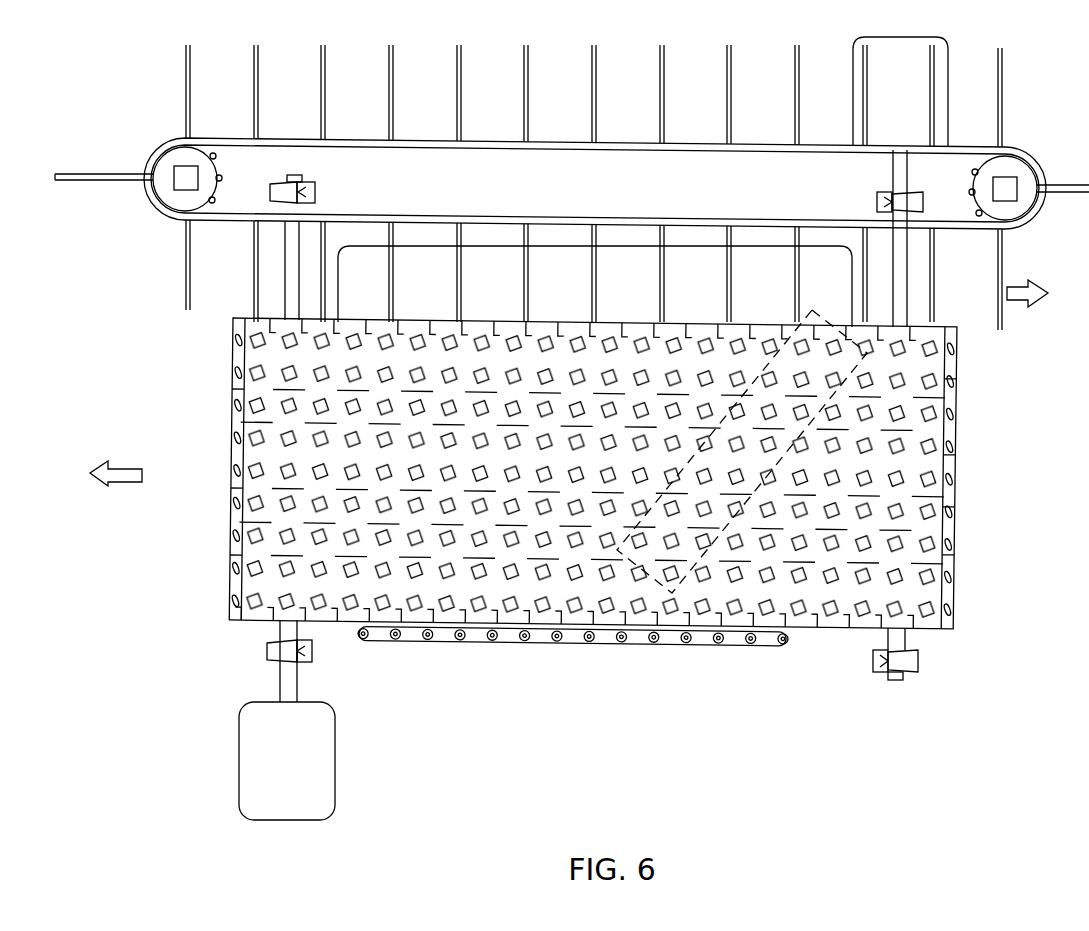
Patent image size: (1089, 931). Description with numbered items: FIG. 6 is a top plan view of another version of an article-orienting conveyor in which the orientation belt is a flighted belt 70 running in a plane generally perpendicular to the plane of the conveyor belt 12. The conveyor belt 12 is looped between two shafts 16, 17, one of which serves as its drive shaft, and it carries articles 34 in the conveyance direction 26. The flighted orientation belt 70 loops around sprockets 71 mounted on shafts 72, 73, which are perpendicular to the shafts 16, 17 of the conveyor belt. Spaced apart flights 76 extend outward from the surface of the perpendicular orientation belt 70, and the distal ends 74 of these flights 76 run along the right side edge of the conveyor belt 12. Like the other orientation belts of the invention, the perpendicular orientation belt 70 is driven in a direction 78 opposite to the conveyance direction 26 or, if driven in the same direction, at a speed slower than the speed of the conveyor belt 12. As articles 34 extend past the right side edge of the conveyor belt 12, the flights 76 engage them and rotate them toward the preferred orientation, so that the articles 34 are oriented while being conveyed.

The conveyor belt 12 is at (614, 473).
The shaft 16 is at (290, 678).
The shaft 17 is at (893, 178).
The conveyance direction 26 is at (125, 465).
The articles 34 is at (867, 353).
The flighted belt 70 is at (168, 142).
The sprockets 71 is at (185, 157).
The shaft 72 is at (180, 182).
The shaft 73 is at (1012, 197).
The distal ends 74 is at (974, 478).
The flights 76 is at (183, 303).
The direction 78 is at (1022, 302).